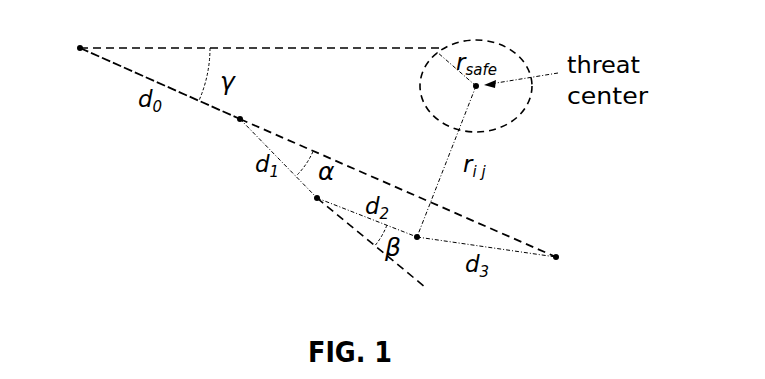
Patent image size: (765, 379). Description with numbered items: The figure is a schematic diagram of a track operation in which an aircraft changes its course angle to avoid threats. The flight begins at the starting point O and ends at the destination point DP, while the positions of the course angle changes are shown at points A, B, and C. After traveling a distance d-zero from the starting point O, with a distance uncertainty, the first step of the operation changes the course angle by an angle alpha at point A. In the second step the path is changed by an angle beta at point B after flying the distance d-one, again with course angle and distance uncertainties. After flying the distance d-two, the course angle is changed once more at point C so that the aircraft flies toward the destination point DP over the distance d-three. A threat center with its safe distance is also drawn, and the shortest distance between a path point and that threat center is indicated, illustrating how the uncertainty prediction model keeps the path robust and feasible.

The starting point O is at (64, 48).
The first course angle change position A is at (233, 132).
The second course angle change position B is at (309, 210).
The third course angle change position C is at (424, 251).
The destination point DP is at (579, 260).